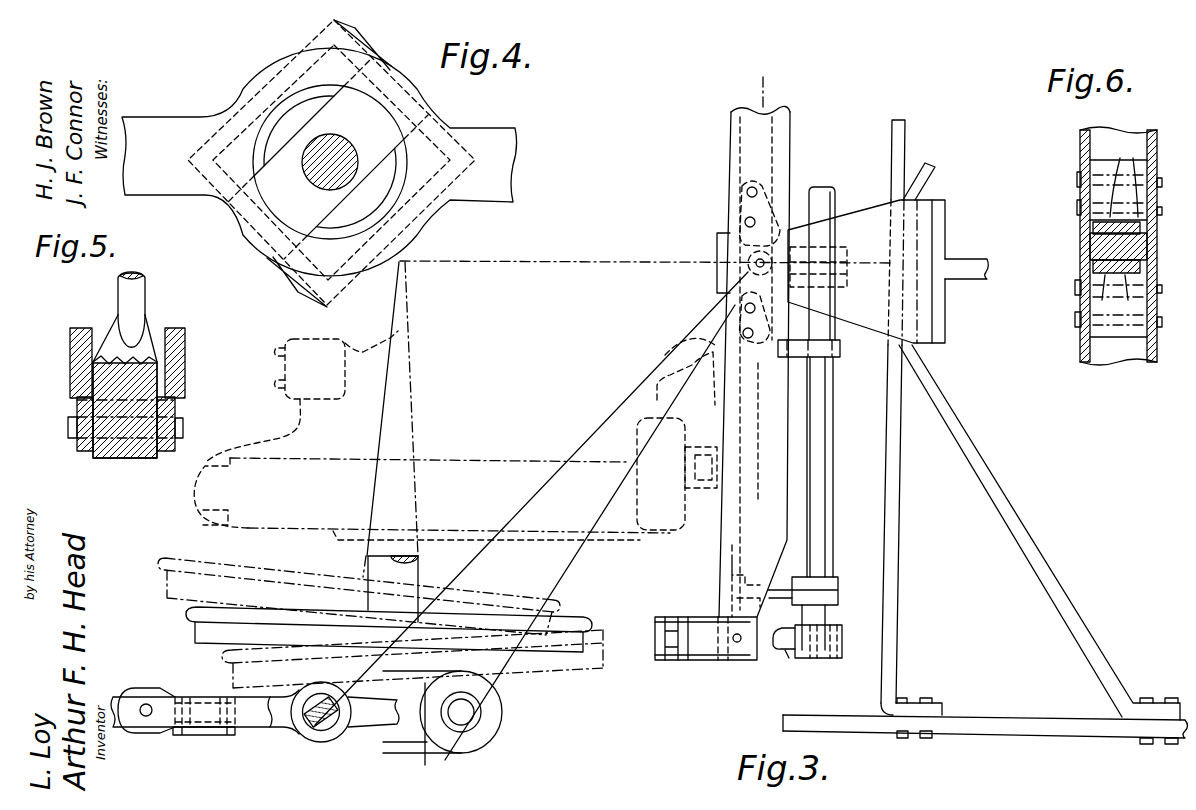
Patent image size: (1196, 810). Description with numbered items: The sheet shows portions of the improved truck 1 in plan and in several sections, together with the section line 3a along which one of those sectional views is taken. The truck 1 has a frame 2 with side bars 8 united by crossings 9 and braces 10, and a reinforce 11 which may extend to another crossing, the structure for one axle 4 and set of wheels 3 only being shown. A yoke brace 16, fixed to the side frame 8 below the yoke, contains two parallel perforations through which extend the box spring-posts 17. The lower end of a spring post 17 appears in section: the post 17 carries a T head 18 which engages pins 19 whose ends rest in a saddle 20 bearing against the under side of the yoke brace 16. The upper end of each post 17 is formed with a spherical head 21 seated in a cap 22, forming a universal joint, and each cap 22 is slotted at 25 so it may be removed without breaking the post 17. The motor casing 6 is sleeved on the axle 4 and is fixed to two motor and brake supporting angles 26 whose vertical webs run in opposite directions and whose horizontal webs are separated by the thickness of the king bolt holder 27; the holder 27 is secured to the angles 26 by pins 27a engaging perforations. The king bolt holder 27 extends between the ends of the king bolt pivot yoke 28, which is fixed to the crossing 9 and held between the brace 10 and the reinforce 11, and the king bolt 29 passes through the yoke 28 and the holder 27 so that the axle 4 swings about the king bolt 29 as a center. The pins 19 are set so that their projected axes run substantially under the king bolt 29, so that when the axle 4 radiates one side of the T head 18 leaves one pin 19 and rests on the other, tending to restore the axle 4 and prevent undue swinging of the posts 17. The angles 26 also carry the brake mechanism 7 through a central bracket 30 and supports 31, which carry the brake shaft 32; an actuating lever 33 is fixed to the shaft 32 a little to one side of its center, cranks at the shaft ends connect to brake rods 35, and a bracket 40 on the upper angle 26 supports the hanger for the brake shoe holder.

In FIG. 3, the truck 1 is at (964, 432).
In FIG. 3, the frame 2 is at (781, 722).
In FIG. 3, the wheels 3 is at (583, 614).
In FIG. 3, the section line 3a— 3a is at (693, 292).
In FIG. 3, the axle 4 is at (419, 561).
In FIG. 3, the motor casing 6 is at (712, 92).
In FIG. 3, the brake mechanism 7 is at (817, 186).
In FIG. 3, the side bars 8 is at (986, 724).
In FIG. 3, the crossings 9 is at (908, 548).
In FIG. 3, the braces 10 is at (981, 457).
In FIG. 3, the reinforce 11 is at (964, 262).
In FIG. 4, the yoke brace 16 is at (178, 123).
In FIG. 5, the yoke brace 16 is at (70, 360).
In FIG. 4, the box spring-post 17 is at (345, 147).
In FIG. 5, the box spring-post 17 is at (121, 291).
In FIG. 3, the box spring-post 17 is at (327, 722).
In FIG. 4, the T head 18 is at (311, 170).
In FIG. 5, the T head 18 is at (133, 458).
In FIG. 3, the T head 18 is at (307, 735).
In FIG. 4, the pins 19 is at (385, 53).
In FIG. 5, the pins 19 is at (176, 442).
In FIG. 5, the saddle 20 is at (78, 450).
In FIG. 3, the spherical heads 21 is at (455, 733).
In FIG. 3, the caps 22 is at (490, 738).
In FIG. 3, the slot 25 is at (483, 705).
In FIG. 3, the motor and brake supporting angles 26 is at (750, 569).
In FIG. 6, the motor and brake supporting angles 26 is at (1154, 130).
In FIG. 3, the king bolt holder 27 is at (861, 218).
In FIG. 6, the king bolt holder 27 is at (1090, 225).
In FIG. 6, the pins 27a is at (1076, 208).
In FIG. 6, the king bolt pivot yoke 28 is at (1118, 175).
In FIG. 6, the king bolt 29 is at (1090, 262).
In FIG. 3, the central bracket 30 is at (716, 238).
In FIG. 3, the supports 31 is at (838, 592).
In FIG. 3, the brake shaft 32 is at (827, 419).
In FIG. 3, the actuating lever 33 is at (857, 353).
In FIG. 3, the brake rods 35 is at (783, 657).
In FIG. 3, the bracket 40 is at (749, 653).